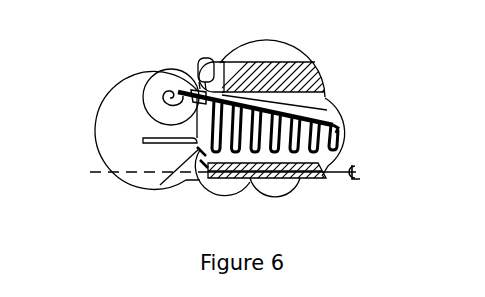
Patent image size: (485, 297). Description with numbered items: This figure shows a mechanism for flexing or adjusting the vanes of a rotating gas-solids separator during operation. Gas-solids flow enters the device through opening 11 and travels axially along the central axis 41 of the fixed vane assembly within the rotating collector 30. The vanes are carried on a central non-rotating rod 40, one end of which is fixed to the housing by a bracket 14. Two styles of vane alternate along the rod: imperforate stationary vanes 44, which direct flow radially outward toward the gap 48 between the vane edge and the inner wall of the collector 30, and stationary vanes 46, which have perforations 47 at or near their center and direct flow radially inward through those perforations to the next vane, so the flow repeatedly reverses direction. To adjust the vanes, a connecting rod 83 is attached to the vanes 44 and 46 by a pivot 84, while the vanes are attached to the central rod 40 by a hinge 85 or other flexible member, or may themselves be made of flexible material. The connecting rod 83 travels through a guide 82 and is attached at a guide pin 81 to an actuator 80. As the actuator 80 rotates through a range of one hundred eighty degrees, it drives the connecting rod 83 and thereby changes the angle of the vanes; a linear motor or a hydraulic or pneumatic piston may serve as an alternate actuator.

The opening 11 is at (170, 153).
The bracket 14 is at (165, 180).
The collector 30 is at (300, 80).
The central non-rotating rod 40 is at (292, 177).
The central axis 41 is at (340, 168).
The stationary imperforate vane 44 is at (205, 165).
The stationary perforated vane 46 is at (250, 178).
The perforations 47 is at (233, 158).
The gap 48 is at (262, 92).
The actuator 80 is at (148, 94).
The guide pin 81 is at (182, 92).
The guide 82 is at (200, 88).
The connecting rod 83 is at (215, 66).
The pivot 84 is at (214, 95).
The hinge 85 is at (323, 172).